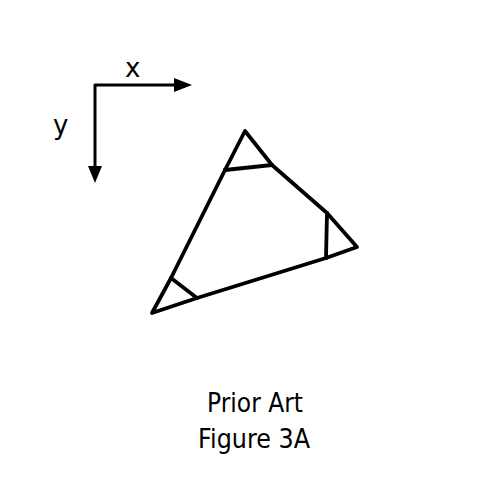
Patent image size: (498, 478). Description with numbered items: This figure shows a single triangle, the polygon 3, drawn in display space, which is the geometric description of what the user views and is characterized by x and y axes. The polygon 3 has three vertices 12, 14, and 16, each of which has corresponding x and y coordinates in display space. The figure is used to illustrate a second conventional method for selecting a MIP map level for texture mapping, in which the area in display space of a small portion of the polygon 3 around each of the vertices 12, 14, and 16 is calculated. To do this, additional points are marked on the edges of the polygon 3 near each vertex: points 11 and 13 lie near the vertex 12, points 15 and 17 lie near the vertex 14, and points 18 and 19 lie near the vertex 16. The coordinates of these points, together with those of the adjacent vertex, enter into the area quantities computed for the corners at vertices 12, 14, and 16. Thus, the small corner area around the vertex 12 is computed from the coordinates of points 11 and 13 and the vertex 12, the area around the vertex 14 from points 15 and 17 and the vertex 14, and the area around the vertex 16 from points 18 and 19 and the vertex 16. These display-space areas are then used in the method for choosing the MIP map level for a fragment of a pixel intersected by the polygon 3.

The polygon 3 is at (305, 26).
The point near vertex 12 11 is at (225, 170).
The vertex 12 is at (245, 139).
The point near vertex 12 13 is at (272, 165).
The vertex 14 is at (152, 313).
The point near vertex 14 15 is at (171, 278).
The vertex 16 is at (358, 249).
The point near vertex 14 17 is at (197, 298).
The point near vertex 16 18 is at (327, 213).
The point near vertex 16 19 is at (326, 258).